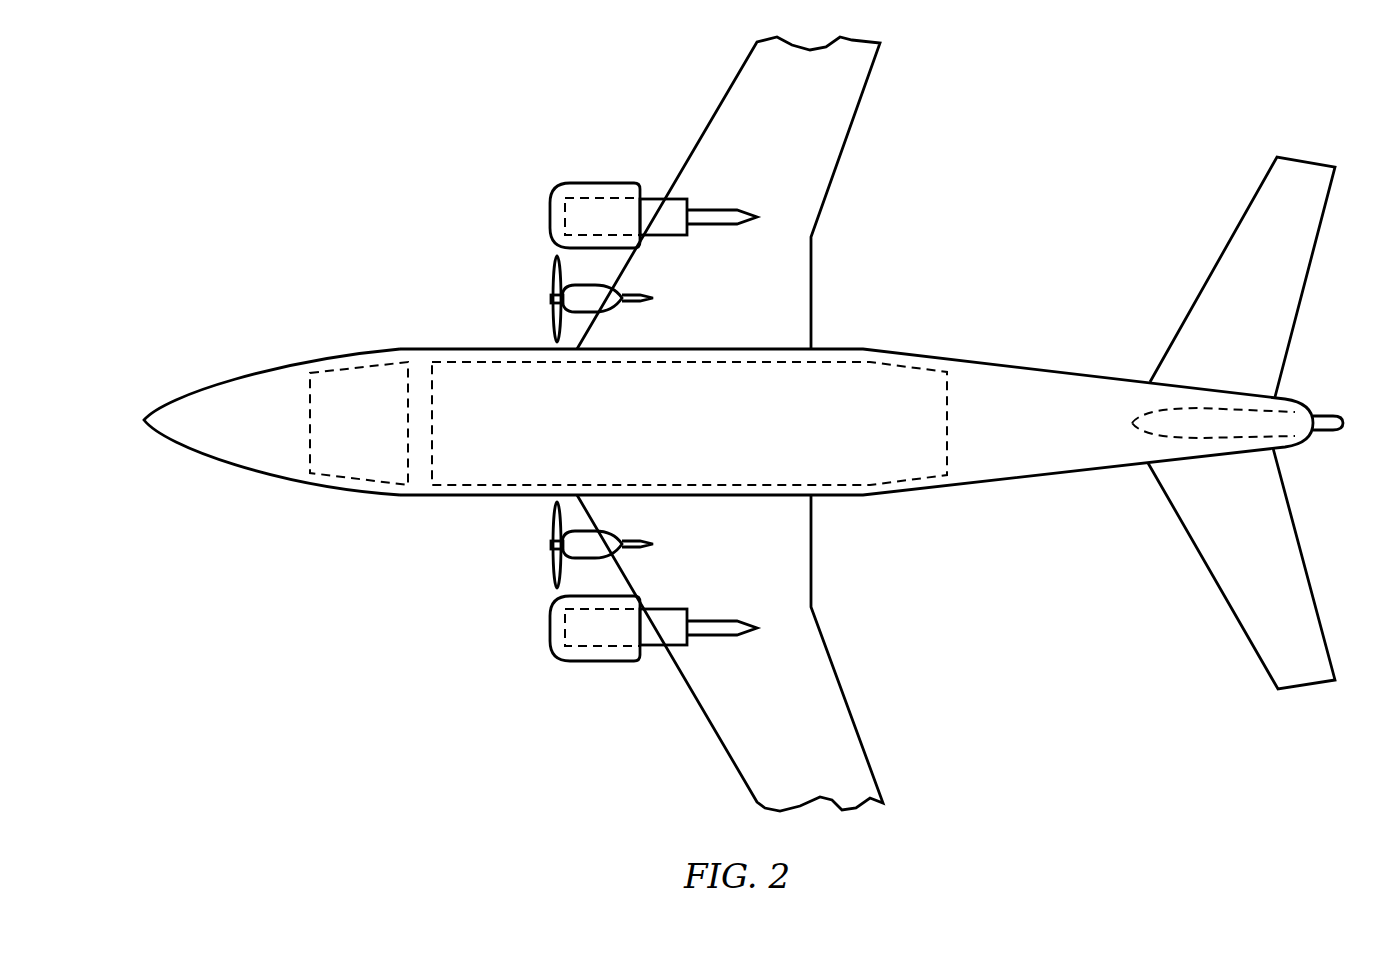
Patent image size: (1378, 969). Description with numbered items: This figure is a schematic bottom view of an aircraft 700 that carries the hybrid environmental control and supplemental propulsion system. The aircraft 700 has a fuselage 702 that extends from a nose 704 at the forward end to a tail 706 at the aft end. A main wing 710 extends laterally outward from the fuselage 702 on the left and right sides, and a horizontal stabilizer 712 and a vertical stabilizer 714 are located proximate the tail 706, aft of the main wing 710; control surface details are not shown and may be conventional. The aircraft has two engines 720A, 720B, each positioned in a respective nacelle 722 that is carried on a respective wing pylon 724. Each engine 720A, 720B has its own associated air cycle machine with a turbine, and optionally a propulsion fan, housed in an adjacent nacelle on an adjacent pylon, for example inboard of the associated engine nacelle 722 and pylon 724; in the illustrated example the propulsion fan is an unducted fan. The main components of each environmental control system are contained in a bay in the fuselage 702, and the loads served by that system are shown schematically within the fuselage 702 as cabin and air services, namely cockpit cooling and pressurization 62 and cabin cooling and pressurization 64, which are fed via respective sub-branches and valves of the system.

The aircraft 700 is at (735, 424).
The cockpit cooling and pressurization 62 is at (369, 362).
The cabin cooling and pressurization 64 is at (504, 360).
The fuselage 702 is at (432, 497).
The nose 704 is at (144, 420).
The tail 706 is at (1314, 432).
The main wing 710 is at (853, 176).
The horizontal stabilizer 712 is at (1194, 568).
The vertical stabilizer 714 is at (1153, 445).
The engine 720A is at (595, 204).
The engine 720B is at (582, 640).
The nacelle 722 is at (612, 663).
The wing pylon 724 is at (717, 636).